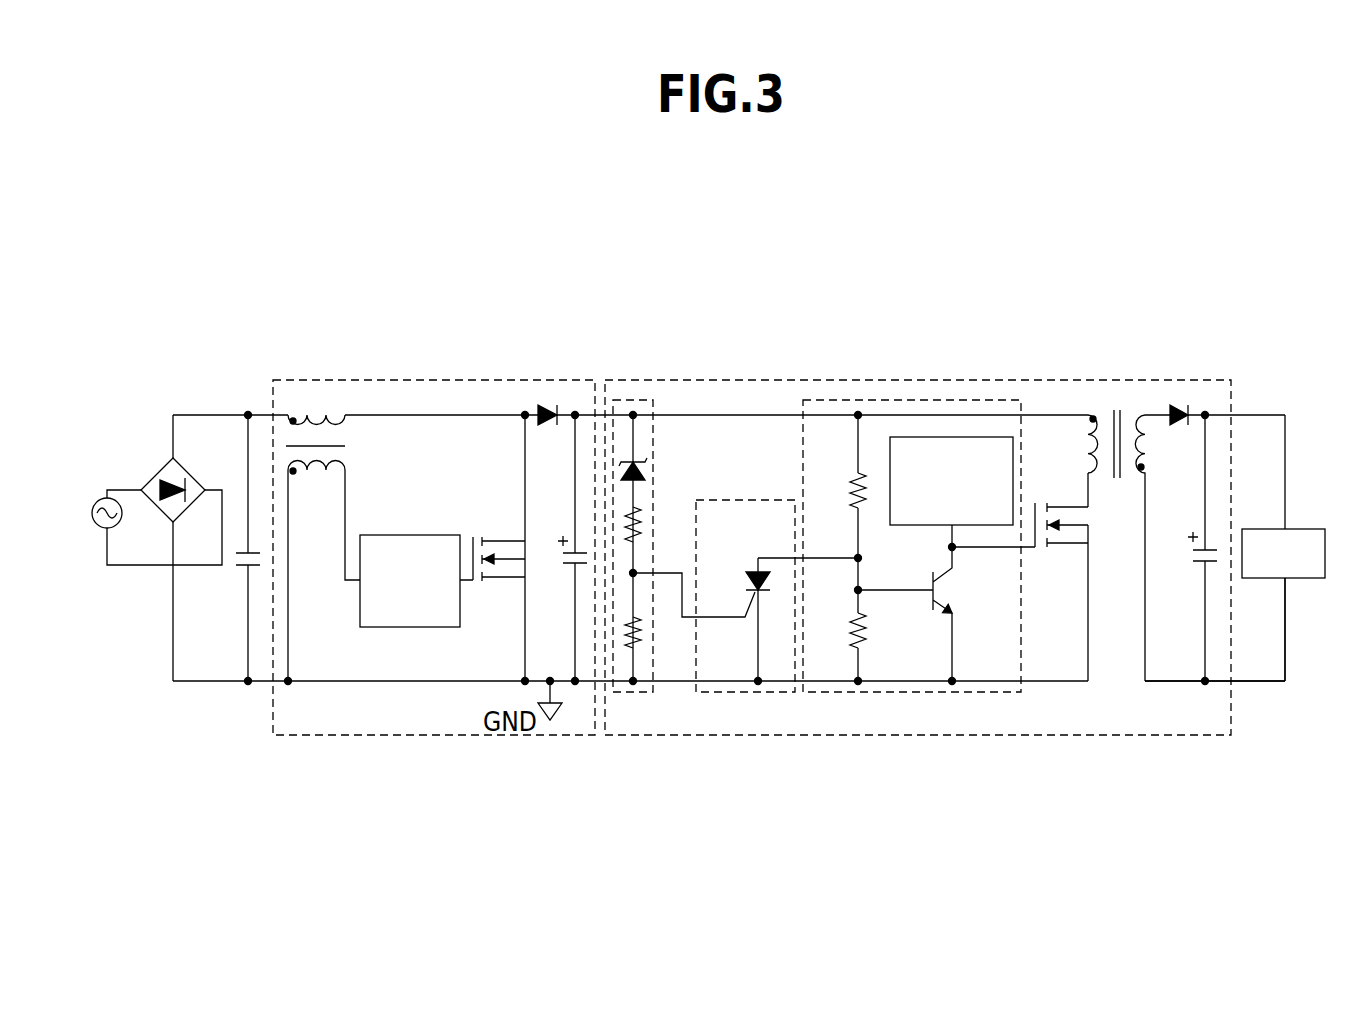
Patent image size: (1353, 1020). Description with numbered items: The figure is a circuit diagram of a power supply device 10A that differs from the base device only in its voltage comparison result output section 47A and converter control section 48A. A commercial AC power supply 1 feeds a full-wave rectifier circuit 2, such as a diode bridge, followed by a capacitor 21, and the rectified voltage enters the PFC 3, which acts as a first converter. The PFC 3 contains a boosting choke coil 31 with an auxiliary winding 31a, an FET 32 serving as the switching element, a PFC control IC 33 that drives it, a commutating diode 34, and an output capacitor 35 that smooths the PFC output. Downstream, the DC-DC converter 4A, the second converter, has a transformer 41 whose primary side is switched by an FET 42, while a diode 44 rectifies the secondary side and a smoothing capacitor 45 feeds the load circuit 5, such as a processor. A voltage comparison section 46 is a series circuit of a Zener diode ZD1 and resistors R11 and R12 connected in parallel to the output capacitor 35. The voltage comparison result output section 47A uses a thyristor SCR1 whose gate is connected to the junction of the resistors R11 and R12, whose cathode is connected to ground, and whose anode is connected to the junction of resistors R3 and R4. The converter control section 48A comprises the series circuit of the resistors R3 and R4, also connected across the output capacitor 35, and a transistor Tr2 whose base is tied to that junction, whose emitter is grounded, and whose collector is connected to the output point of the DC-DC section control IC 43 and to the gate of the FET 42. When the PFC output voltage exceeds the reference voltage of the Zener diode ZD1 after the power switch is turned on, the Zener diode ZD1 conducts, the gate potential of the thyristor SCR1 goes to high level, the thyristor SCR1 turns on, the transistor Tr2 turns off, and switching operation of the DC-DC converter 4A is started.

The AC power supply 1 is at (99, 502).
The full-wave rectifier circuit 2 is at (194, 472).
The capacitor 21 is at (247, 569).
The PFC 3 is at (428, 740).
The boosting choke coil 31 is at (348, 423).
The auxiliary winding 31a is at (348, 458).
The FET 32 is at (480, 537).
The PFC control IC 33 is at (435, 535).
The commutating diode 34 is at (545, 405).
The output capacitor 35 is at (571, 566).
The power supply device 10A is at (736, 315).
The voltage comparison section 46 is at (633, 400).
The Zener diode ZD1 is at (645, 468).
The resistor R11 is at (643, 515).
The resistor R12 is at (640, 648).
The voltage comparison result output section 47A is at (757, 500).
The thyristor SCR1 is at (758, 572).
The converter control section 48A is at (836, 400).
The resistor R3 is at (838, 513).
The resistor R4 is at (878, 649).
The transistor Tr2 is at (946, 605).
The DC-DC section control IC 43 is at (928, 437).
The FET 42 is at (1040, 548).
The transformer 41 is at (1122, 407).
The diode 44 is at (1180, 405).
The smoothing capacitor 45 is at (1196, 562).
The DC-DC converter 4A is at (1205, 735).
The load circuit 5 is at (1312, 529).